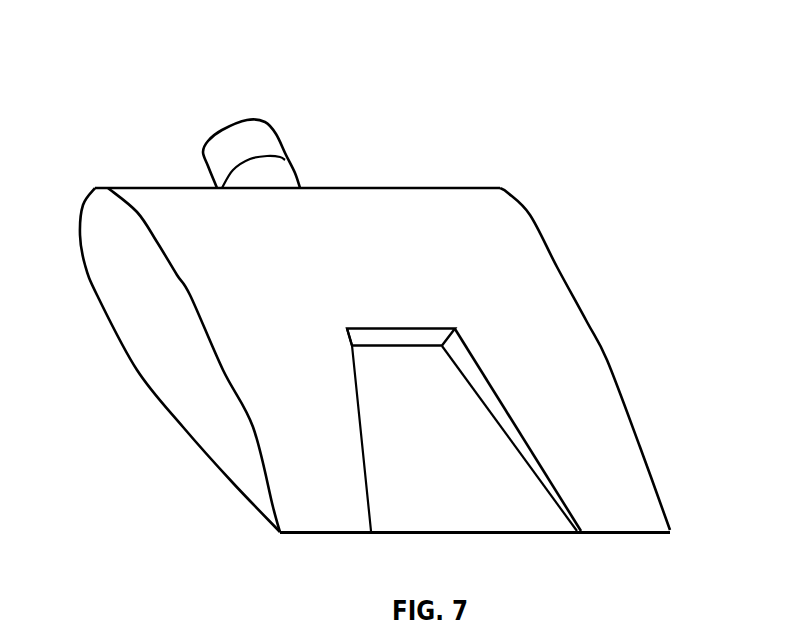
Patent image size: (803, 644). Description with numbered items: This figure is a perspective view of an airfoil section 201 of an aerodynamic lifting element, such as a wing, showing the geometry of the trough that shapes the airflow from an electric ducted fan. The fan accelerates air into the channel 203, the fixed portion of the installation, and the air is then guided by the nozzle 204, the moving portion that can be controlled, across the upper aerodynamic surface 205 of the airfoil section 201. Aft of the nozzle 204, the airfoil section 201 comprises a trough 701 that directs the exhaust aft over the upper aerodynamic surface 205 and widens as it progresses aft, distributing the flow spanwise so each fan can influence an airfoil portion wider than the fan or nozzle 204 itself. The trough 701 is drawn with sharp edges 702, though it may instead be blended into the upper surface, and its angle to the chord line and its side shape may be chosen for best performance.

The airfoil section 201 is at (542, 88).
The channel 203 is at (237, 138).
The nozzle 204 is at (425, 325).
The upper aerodynamic surface 205 is at (347, 223).
The trough 701 is at (375, 377).
The sharp edges 702 is at (530, 422).